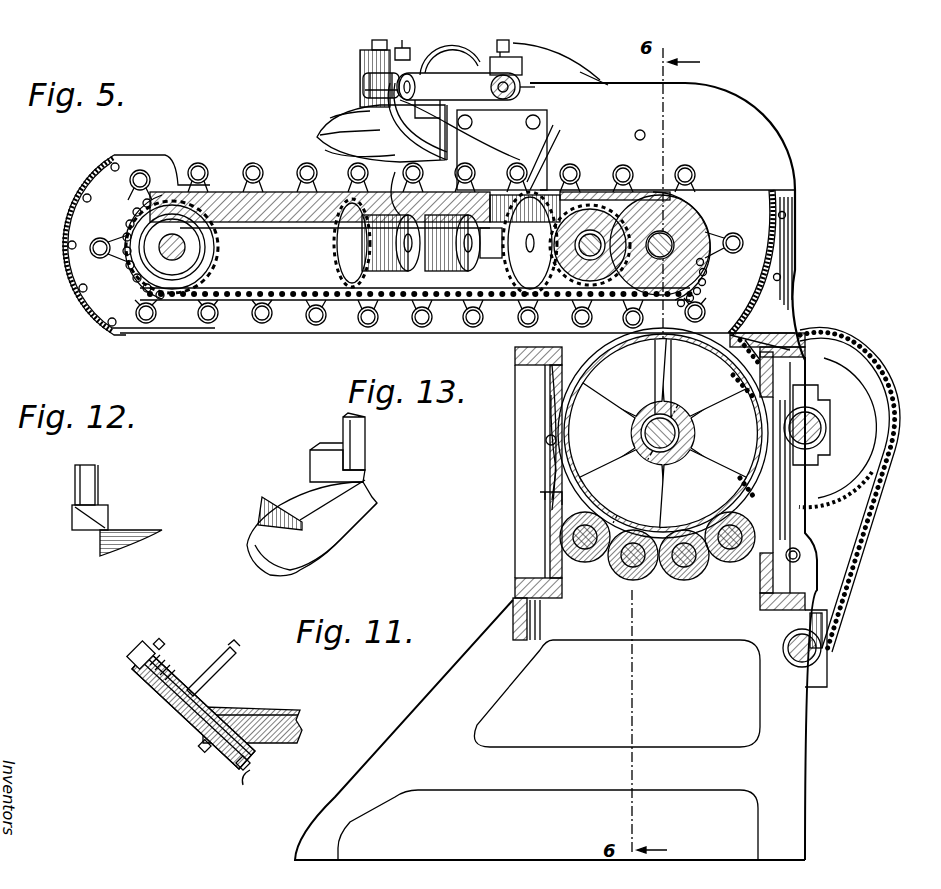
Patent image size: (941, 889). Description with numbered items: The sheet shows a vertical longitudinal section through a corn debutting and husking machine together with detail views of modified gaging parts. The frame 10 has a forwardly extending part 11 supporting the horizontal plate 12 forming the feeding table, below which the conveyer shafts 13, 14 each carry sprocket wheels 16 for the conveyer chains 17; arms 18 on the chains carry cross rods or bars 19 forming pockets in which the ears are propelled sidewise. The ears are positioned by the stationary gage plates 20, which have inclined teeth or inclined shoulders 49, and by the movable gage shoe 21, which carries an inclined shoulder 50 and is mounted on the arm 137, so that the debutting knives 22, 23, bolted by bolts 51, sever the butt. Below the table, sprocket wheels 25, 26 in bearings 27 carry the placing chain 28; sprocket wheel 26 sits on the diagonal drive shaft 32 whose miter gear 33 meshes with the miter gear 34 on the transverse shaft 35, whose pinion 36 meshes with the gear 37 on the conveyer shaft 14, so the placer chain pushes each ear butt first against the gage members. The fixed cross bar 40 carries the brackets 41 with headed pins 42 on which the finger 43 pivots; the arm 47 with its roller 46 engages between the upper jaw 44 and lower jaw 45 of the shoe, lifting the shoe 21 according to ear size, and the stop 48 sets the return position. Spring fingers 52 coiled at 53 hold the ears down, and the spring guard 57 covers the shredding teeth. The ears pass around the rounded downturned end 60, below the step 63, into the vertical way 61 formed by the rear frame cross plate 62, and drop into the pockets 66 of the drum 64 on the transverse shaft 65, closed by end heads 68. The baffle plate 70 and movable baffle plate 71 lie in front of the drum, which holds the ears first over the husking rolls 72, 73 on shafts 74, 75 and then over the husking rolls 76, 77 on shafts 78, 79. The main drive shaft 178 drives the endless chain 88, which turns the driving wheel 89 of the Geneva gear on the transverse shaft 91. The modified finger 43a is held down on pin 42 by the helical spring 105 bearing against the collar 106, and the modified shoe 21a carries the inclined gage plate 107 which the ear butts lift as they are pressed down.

In FIG. 5, the frame 10 is at (513, 640).
In FIG. 5, the forwardly extending part 11 is at (150, 335).
In FIG. 5, the horizontal plate 12 is at (250, 190).
In FIG. 5, the conveyer shaft 13 is at (165, 242).
In FIG. 5, the conveyer shaft 14 is at (690, 256).
In FIG. 5, the sprocket wheels 16 is at (208, 258).
In FIG. 5, the conveyer chains 17 is at (270, 325).
In FIG. 5, the arms 18 is at (218, 302).
In FIG. 5, the cross rods or bars 19 is at (216, 325).
In FIG. 5, the stationary gage plates 20 is at (198, 165).
In FIG. 5, the movable gage shoe 21 is at (322, 135).
In FIG. 5, the debutting knife 22 is at (502, 150).
In FIG. 5, the debutting knife 23 is at (548, 180).
In FIG. 5, the sprocket wheel 25 is at (391, 247).
In FIG. 5, the sprocket wheel 26 is at (463, 247).
In FIG. 5, the bearings 27 is at (390, 187).
In FIG. 5, the placing chain 28 is at (372, 300).
In FIG. 5, the diagonal drive shaft 32 is at (508, 300).
In FIG. 5, the miter gear 33 is at (558, 300).
In FIG. 5, the miter gear 34 is at (600, 205).
In FIG. 5, the transverse shaft 35 is at (608, 302).
In FIG. 5, the pinion 36 is at (655, 195).
In FIG. 5, the gear 37 is at (682, 302).
In FIG. 5, the fixed cross bar 40 is at (520, 94).
In FIG. 5, the fixed supporting arms or brackets 41 is at (425, 105).
In FIG. 11, the fixed supporting arms or brackets 41 is at (252, 725).
In FIG. 5, the headed pin 42 is at (363, 80).
In FIG. 11, the headed pin 42 is at (227, 770).
In FIG. 5, the finger 43 is at (392, 110).
In FIG. 5, the upper jaw 44 is at (372, 45).
In FIG. 5, the lower jaw 45 is at (363, 93).
In FIG. 5, the roller 46 is at (410, 58).
In FIG. 5, the arm 47 is at (360, 62).
In FIG. 11, the stop 48 is at (190, 730).
In FIG. 5, the inclined teeth or inclined shoulders 49 is at (350, 180).
In FIG. 5, the inclined shoulder 50 is at (325, 150).
In FIG. 5, the bolts 51 is at (527, 122).
In FIG. 5, the spring finger 52 is at (505, 160).
In FIG. 5, the coil 53 is at (471, 57).
In FIG. 5, the spring guard 57 is at (553, 155).
In FIG. 5, the rounded downturned end 60 is at (712, 235).
In FIG. 5, the vertical way or passage 61 is at (752, 262).
In FIG. 5, the rear frame cross plate 62 is at (786, 242).
In FIG. 5, the step 63 is at (694, 178).
In FIG. 5, the drum or cylinder 64 is at (554, 407).
In FIG. 5, the transverse shaft 65 is at (643, 433).
In FIG. 5, the pockets 66 is at (663, 433).
In FIG. 5, the end heads 68 is at (645, 380).
In FIG. 5, the baffle plate 70 is at (552, 422).
In FIG. 5, the movable baffle plate 71 is at (560, 465).
In FIG. 5, the husking roll 72 is at (592, 562).
In FIG. 5, the husking roll 73 is at (640, 582).
In FIG. 5, the transverse shaft 74 is at (560, 533).
In FIG. 5, the transverse shaft 75 is at (620, 580).
In FIG. 5, the husking roll 76 is at (672, 532).
In FIG. 5, the husking roll 77 is at (722, 520).
In FIG. 5, the shaft 78 is at (690, 582).
In FIG. 5, the shaft 79 is at (728, 562).
In FIG. 5, the endless chain 88 is at (862, 548).
In FIG. 5, the driving wheel 89 is at (837, 432).
In FIG. 5, the transverse shaft 91 is at (818, 442).
In FIG. 11, the helical spring 105 is at (160, 692).
In FIG. 11, the collar 106 is at (160, 636).
In FIG. 12, the inclined gage plate 107 is at (135, 548).
In FIG. 13, the inclined gage plate 107 is at (312, 550).
In FIG. 5, the arm 137 is at (582, 78).
In FIG. 12, the arm 137 is at (100, 480).
In FIG. 13, the arm 137 is at (366, 442).
In FIG. 5, the main drive shaft 178 is at (786, 656).
In FIG. 12, the movable shoe 21a is at (110, 515).
In FIG. 13, the movable shoe 21a is at (292, 480).
In FIG. 11, the finger 43a is at (226, 650).